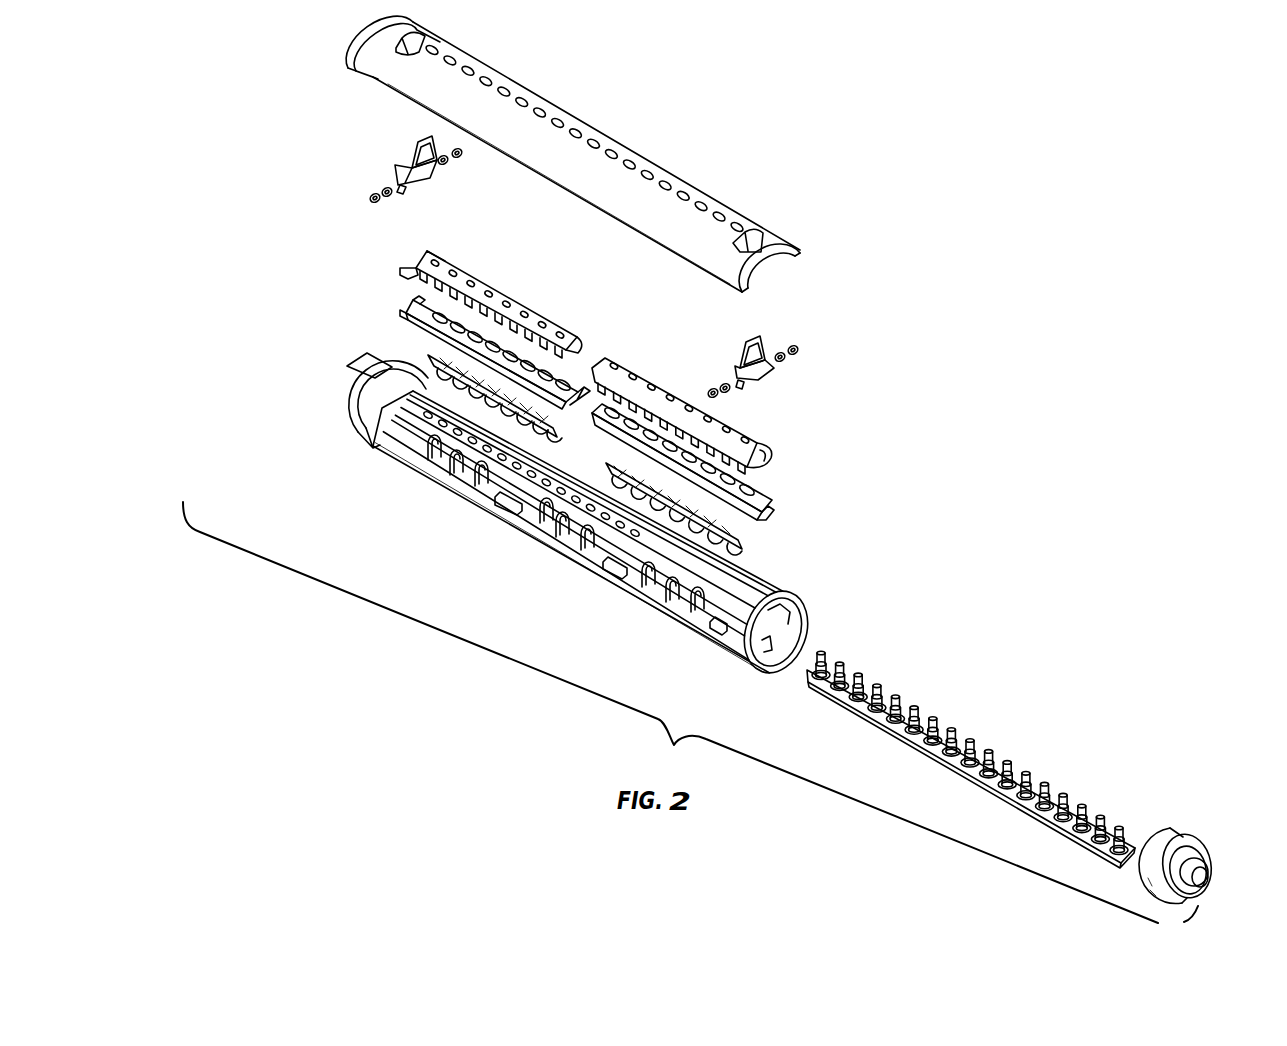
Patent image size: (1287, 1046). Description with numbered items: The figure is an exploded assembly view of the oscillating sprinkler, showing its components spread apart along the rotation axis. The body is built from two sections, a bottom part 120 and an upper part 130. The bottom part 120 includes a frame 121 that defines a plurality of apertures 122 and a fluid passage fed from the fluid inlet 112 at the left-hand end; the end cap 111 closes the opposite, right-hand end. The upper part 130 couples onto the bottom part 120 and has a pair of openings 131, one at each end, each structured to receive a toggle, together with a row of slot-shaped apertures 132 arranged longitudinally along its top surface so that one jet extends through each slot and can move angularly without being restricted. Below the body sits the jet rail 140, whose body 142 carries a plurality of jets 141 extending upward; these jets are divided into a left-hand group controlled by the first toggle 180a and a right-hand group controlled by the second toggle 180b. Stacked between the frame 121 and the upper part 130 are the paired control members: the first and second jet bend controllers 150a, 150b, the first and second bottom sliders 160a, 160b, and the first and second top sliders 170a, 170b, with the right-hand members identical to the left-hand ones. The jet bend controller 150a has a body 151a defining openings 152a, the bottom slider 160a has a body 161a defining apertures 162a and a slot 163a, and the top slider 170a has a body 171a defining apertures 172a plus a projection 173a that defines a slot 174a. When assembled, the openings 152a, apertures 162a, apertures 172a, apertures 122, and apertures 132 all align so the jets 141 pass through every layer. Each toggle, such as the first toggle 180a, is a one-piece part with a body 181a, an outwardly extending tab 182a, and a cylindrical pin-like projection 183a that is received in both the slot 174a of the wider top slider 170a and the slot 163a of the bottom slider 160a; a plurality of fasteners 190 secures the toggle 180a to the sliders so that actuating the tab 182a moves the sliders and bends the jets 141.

The end cap 111 is at (1178, 827).
The fluid inlet 112 is at (350, 408).
The bottom part 120 is at (596, 536).
The frame 121 is at (413, 405).
The apertures 122 is at (486, 450).
The upper part 130 is at (594, 148).
The openings 131 is at (433, 32).
The apertures 132 is at (490, 80).
The jet rail 140 is at (971, 738).
The jets 141 is at (873, 683).
The body 142 is at (1002, 790).
The first jet bend controller 150a is at (431, 392).
The second jet bend controller 150b is at (751, 536).
The body 151a is at (552, 432).
The openings 152a is at (418, 358).
The first bottom slider 160a is at (466, 345).
The second bottom slider 160b is at (768, 494).
The body 161a is at (585, 372).
The apertures 162a is at (553, 380).
The slot 163a is at (410, 305).
The first top slider 170a is at (438, 284).
The second top slider 170b is at (757, 431).
The body 171a is at (503, 284).
The apertures 172a is at (548, 312).
The projection 173a is at (402, 268).
The slot 174a is at (425, 254).
The first toggle 180a is at (383, 162).
The second toggle 180b is at (758, 345).
The body 181a is at (392, 166).
The tab 182a is at (416, 140).
The projection 183a is at (404, 191).
The fasteners 190 is at (362, 209).